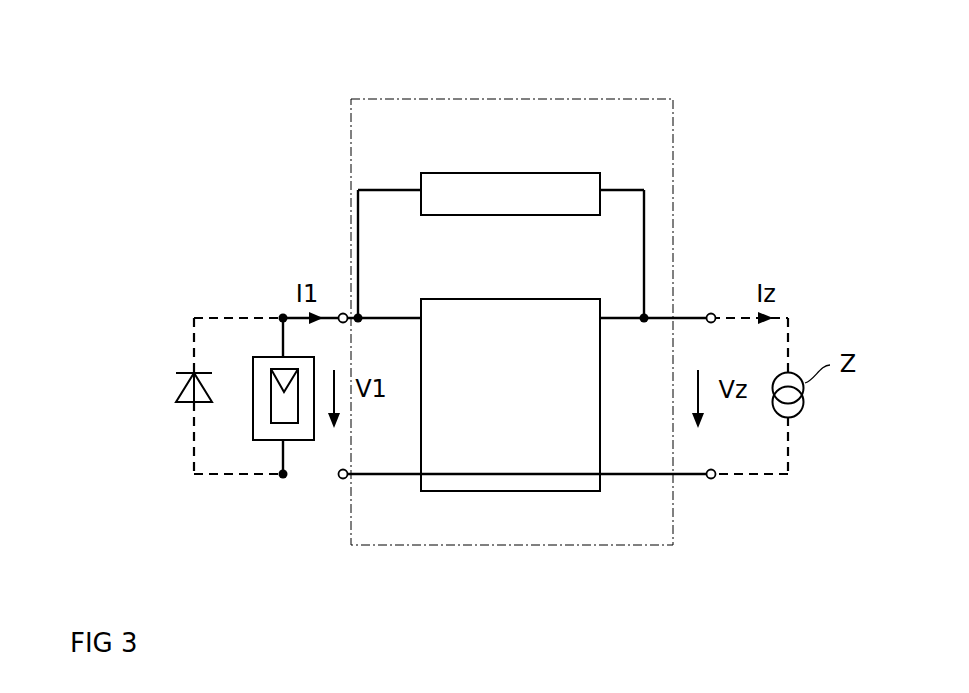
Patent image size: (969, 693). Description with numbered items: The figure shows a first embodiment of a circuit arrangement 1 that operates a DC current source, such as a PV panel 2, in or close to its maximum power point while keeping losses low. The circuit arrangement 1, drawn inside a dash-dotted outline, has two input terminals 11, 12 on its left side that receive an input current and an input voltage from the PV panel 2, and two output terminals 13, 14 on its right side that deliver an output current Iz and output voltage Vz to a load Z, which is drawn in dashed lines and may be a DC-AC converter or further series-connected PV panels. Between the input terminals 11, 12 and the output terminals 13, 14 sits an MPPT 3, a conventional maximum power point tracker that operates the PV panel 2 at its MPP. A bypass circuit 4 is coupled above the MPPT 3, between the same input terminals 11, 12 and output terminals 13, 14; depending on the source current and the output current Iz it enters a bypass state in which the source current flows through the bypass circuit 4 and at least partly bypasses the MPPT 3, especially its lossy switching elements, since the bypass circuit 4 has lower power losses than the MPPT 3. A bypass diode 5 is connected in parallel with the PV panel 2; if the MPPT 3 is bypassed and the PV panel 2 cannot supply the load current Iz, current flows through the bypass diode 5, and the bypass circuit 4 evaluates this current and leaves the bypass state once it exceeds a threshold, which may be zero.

The circuit arrangement 1 is at (383, 93).
The PV panel 2 is at (248, 395).
The MPPT 3 is at (505, 298).
The bypass circuit 4 is at (515, 172).
The bypass diode 5 is at (185, 368).
The input terminal 11 is at (340, 310).
The input terminal 12 is at (338, 484).
The output terminal 13 is at (714, 308).
The output terminal 14 is at (714, 480).